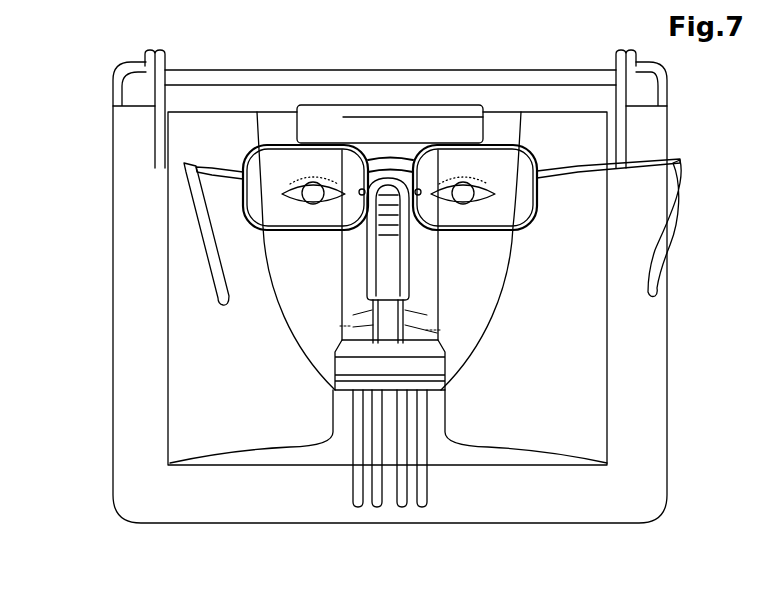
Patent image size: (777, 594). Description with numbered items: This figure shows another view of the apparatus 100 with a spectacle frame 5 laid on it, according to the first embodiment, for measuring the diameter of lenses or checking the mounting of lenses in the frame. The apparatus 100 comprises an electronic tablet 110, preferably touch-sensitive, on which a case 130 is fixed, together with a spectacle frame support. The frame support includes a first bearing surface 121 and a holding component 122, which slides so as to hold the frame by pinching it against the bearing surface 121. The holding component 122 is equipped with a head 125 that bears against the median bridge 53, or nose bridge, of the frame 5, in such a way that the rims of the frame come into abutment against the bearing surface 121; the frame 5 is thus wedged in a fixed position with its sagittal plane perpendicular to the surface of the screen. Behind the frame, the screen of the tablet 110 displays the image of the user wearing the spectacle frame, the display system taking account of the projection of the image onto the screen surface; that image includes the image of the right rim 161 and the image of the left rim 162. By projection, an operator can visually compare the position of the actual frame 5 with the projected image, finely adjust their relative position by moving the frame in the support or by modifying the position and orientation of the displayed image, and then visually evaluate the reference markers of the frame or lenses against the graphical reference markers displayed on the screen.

The spectacle frame 5 is at (237, 158).
The median bridge 53 is at (383, 167).
The apparatus 100 is at (112, 315).
The electronic tablet 110 is at (567, 407).
The first bearing surface 121 is at (420, 132).
The holding component 122 is at (345, 366).
The head 125 is at (378, 263).
The case 130 is at (130, 196).
The image of the right rim 161 is at (262, 157).
The image of the left rim 162 is at (514, 143).